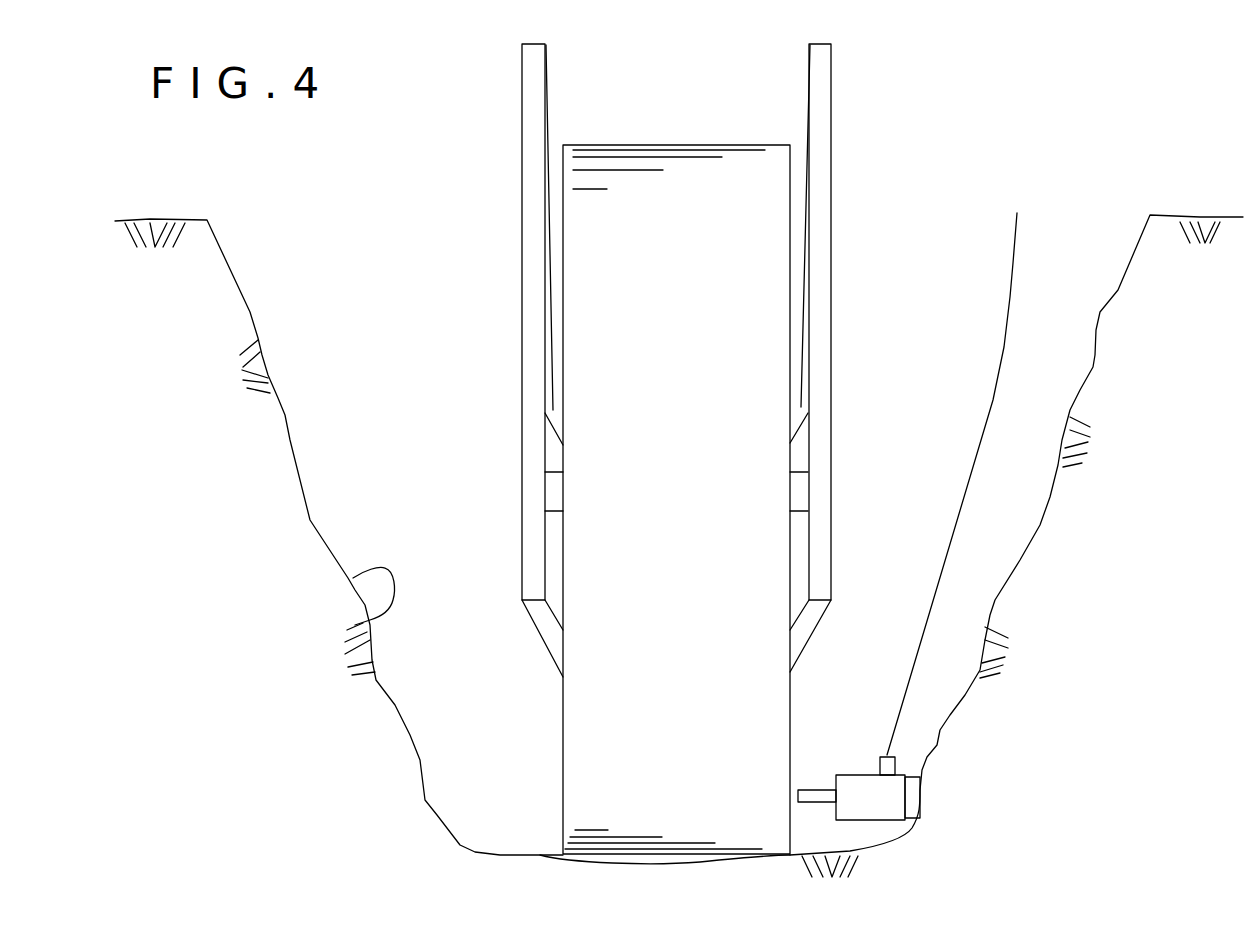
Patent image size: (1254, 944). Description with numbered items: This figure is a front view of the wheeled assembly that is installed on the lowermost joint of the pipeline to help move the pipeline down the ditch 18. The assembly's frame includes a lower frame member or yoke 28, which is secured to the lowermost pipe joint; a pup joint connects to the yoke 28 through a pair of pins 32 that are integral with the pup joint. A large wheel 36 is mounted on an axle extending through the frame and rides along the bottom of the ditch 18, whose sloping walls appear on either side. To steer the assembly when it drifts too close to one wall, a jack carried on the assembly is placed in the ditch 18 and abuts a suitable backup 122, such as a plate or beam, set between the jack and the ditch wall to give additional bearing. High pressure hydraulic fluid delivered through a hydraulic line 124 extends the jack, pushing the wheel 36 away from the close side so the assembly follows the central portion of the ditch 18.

The ditch 18 is at (370, 620).
The yoke 28 is at (530, 487).
The pins 32 is at (553, 490).
The wheel 36 is at (662, 742).
The backup 122 is at (914, 777).
The hydraulic line 124 is at (1004, 345).